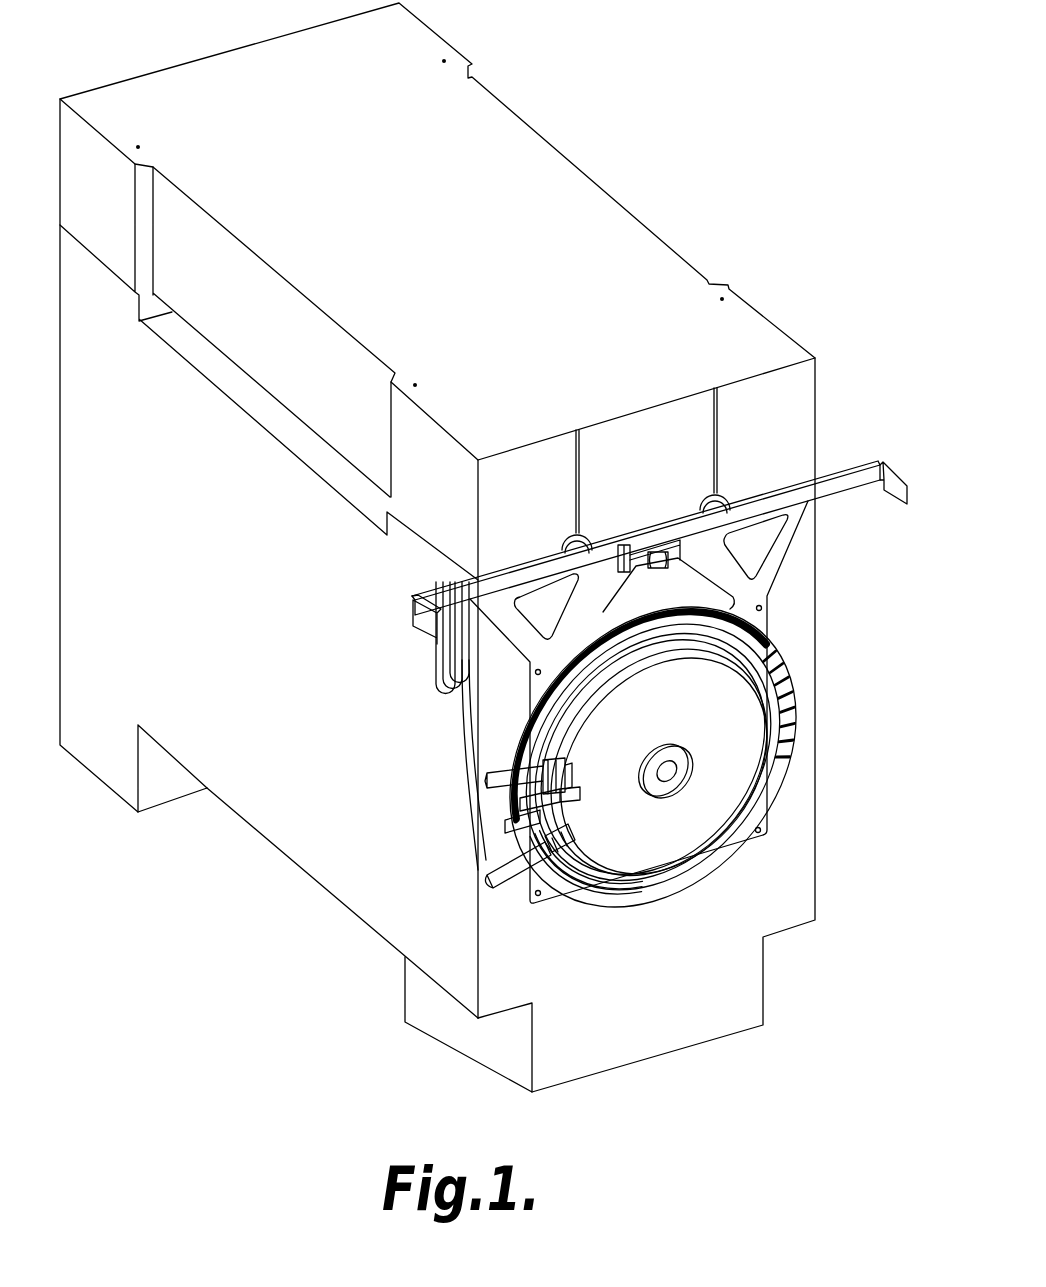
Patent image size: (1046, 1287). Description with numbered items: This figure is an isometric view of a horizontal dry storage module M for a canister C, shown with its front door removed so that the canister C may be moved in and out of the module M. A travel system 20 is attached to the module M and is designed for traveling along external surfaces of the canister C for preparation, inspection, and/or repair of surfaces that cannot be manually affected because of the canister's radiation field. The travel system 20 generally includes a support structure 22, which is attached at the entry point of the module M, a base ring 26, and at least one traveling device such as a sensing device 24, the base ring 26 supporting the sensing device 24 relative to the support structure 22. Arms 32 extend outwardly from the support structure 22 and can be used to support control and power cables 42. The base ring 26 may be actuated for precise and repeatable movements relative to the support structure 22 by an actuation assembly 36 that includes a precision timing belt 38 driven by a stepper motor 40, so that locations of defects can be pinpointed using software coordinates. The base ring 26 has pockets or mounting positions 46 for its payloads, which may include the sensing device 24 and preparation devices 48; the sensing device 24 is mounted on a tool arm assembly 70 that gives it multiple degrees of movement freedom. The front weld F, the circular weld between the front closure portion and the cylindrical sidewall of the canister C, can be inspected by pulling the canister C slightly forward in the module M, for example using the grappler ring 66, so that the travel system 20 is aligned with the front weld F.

The horizontal dry storage module M is at (587, 182).
The travel system 20 is at (640, 654).
The support structure 22 is at (651, 675).
The arms 32 is at (900, 480).
The control and power cables 42 is at (442, 592).
The precision timing belt 38 is at (603, 615).
The actuation assembly 36 is at (607, 586).
The stepper motor 40 is at (658, 553).
The base ring 26 is at (762, 653).
The canister C is at (762, 655).
The front weld F is at (688, 695).
The mounting positions 46 is at (793, 707).
The grappler ring 66 is at (675, 785).
The preparation devices 48 is at (500, 768).
The sensing device 24 is at (563, 793).
The tool arm assembly 70 is at (520, 817).